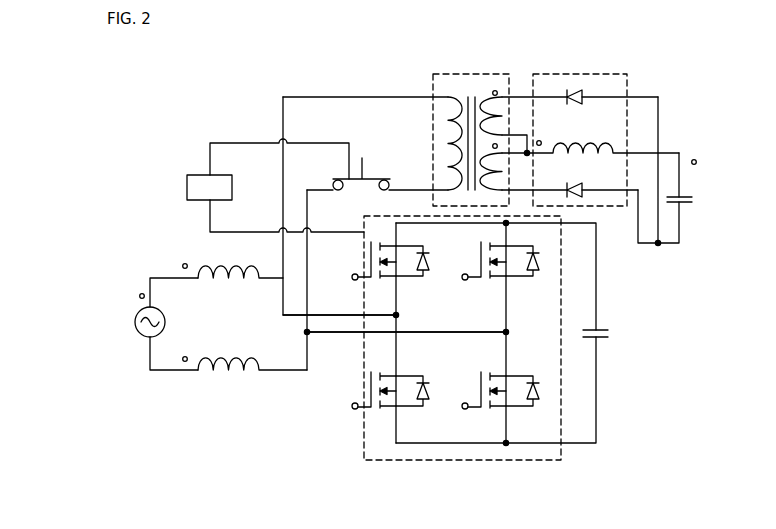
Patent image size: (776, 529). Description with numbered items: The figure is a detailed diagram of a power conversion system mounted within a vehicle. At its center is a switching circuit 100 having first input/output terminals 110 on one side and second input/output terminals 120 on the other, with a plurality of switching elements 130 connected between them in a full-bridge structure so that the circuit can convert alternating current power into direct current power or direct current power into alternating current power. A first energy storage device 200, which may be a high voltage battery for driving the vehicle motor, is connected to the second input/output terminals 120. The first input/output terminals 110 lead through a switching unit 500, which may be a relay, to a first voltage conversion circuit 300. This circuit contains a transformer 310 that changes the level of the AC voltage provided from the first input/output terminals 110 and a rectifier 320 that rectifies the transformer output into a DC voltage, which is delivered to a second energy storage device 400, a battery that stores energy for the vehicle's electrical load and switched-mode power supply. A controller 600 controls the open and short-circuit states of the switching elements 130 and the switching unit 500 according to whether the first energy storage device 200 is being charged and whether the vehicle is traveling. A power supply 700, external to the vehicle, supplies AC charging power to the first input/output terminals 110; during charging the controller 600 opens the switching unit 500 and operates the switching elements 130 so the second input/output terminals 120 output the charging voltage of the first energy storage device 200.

The switching circuit 100 is at (529, 353).
The first input/output terminals 110 is at (322, 313).
The second input/output terminals 120 is at (587, 225).
The switching elements 130 is at (410, 278).
The first energy storage device 200 is at (607, 330).
The first voltage conversion circuit 300 is at (572, 26).
The transformer 310 is at (488, 73).
The rectifier 320 is at (558, 73).
The second energy storage device 400 is at (690, 195).
The switching unit 500 is at (377, 177).
The controller 600 is at (275, 185).
The power supply 700 is at (133, 320).